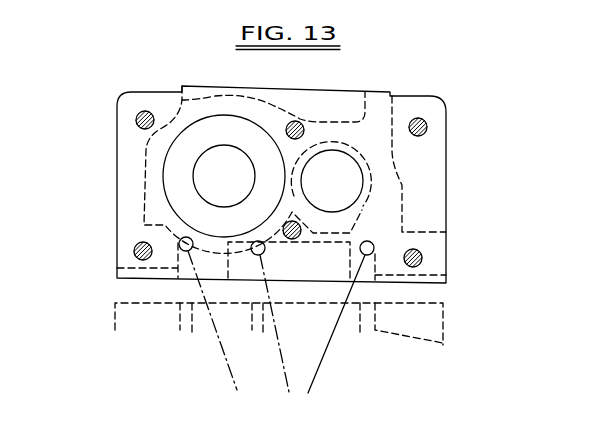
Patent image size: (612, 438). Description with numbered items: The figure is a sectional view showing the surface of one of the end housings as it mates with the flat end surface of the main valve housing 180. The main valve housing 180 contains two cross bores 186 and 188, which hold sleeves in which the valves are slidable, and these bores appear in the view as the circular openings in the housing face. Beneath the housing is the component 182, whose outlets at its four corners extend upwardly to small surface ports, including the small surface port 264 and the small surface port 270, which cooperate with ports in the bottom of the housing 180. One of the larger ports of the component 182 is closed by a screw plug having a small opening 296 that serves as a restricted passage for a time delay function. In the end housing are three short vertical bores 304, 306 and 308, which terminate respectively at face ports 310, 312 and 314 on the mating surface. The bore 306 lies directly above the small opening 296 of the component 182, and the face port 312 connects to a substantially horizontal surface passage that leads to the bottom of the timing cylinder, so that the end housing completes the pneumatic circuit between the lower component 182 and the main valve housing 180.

The main valve housing 180 is at (210, 79).
The component 182 is at (443, 307).
The cross bore 186 is at (350, 177).
The cross bore 188 is at (247, 153).
The small surface port 264 is at (180, 330).
The small surface port 270 is at (443, 343).
The small opening 296 is at (252, 330).
The short vertical bore 304 is at (446, 276).
The short vertical bore 306 is at (280, 286).
The short vertical bore 308 is at (117, 268).
The face port 310 is at (374, 247).
The face port 312 is at (264, 251).
The face port 314 is at (180, 243).